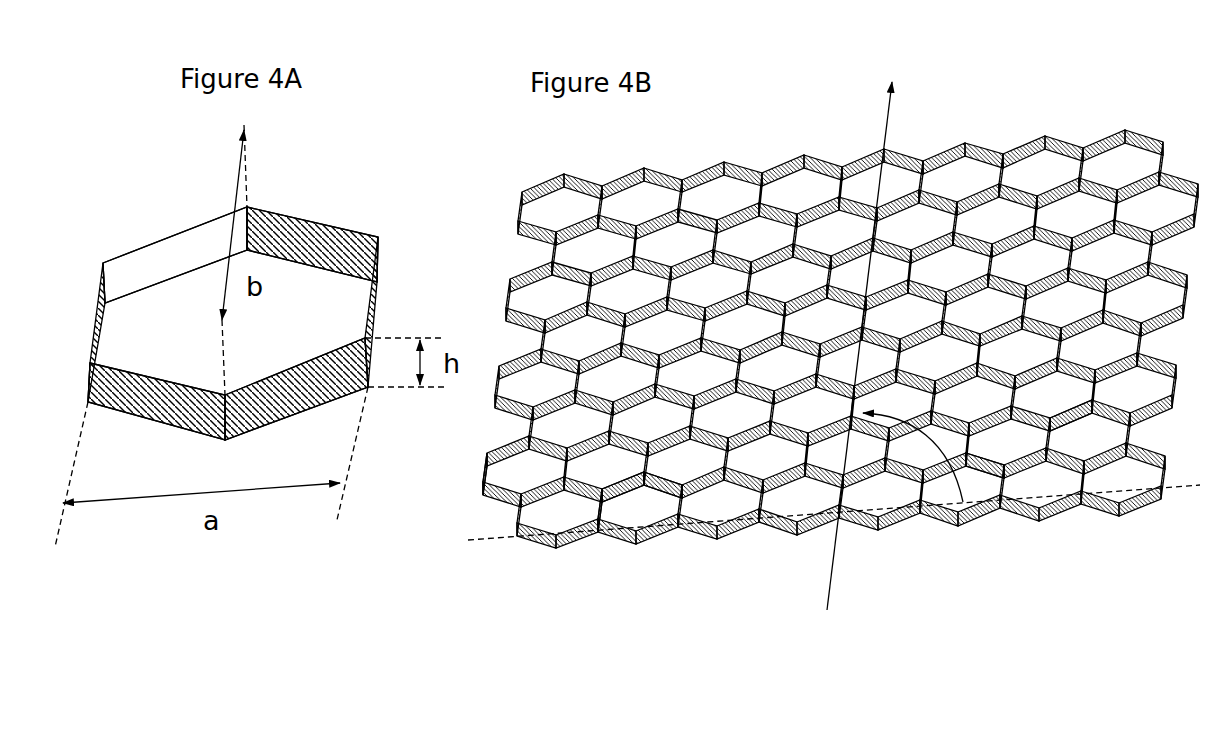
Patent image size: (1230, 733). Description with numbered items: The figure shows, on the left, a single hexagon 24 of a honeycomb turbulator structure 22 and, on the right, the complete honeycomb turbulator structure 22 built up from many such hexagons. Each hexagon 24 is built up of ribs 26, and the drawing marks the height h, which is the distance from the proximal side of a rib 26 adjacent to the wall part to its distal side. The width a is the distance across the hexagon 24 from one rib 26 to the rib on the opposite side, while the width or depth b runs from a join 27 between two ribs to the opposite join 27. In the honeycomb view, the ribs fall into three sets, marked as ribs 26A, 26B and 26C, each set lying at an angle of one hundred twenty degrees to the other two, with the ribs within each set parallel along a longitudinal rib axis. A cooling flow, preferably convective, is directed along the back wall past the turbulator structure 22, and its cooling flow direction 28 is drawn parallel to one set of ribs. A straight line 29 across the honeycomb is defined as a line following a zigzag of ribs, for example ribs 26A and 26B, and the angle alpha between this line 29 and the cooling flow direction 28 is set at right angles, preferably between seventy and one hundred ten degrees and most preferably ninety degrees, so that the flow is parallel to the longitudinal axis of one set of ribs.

In FIG. 4B, the turbulator structure 22 is at (780, 110).
In FIG. 4A, the hexagon 24 is at (323, 183).
In FIG. 4A, the ribs 26 is at (140, 257).
In FIG. 4A, the join 27 is at (377, 265).
In FIG. 4B, the first set of ribs 26A is at (627, 493).
In FIG. 4B, the second set of ribs 26B is at (667, 495).
In FIG. 4B, the third set of ribs 26C is at (487, 466).
In FIG. 4B, the cooling flow direction 28 is at (887, 130).
In FIG. 4B, the straight line 29 is at (500, 542).